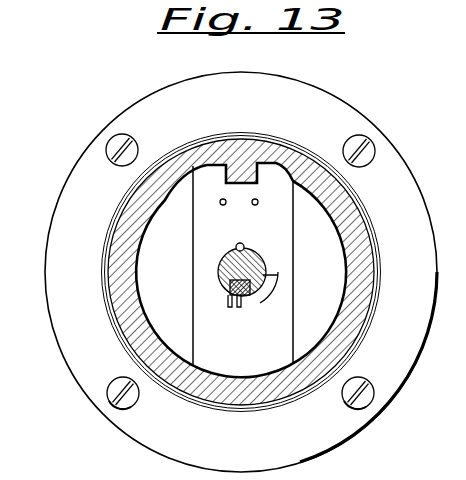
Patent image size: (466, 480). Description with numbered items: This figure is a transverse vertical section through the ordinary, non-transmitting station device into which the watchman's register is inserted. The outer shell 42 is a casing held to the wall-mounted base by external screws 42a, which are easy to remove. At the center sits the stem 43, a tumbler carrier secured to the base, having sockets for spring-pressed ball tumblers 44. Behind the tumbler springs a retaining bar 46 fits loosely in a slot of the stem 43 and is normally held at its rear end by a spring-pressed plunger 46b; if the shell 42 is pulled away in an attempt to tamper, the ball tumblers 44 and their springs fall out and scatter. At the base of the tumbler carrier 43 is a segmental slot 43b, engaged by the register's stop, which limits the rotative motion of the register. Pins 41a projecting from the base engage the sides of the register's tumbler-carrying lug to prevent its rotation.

The pins 41a is at (220, 202).
The shell 42 is at (122, 330).
The external screws 42a is at (369, 153).
The stem 43 is at (218, 270).
The segmental slot 43b is at (262, 297).
The ball tumblers 44 is at (244, 249).
The retaining bar 46 is at (252, 285).
The spring-pressed plunger 46b is at (233, 306).